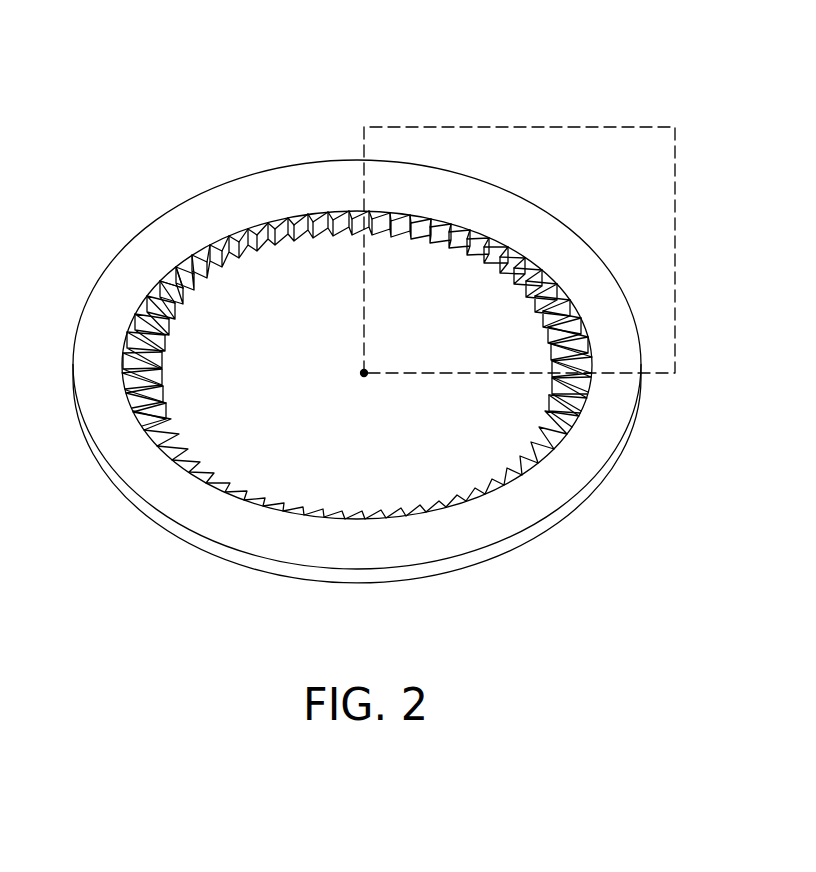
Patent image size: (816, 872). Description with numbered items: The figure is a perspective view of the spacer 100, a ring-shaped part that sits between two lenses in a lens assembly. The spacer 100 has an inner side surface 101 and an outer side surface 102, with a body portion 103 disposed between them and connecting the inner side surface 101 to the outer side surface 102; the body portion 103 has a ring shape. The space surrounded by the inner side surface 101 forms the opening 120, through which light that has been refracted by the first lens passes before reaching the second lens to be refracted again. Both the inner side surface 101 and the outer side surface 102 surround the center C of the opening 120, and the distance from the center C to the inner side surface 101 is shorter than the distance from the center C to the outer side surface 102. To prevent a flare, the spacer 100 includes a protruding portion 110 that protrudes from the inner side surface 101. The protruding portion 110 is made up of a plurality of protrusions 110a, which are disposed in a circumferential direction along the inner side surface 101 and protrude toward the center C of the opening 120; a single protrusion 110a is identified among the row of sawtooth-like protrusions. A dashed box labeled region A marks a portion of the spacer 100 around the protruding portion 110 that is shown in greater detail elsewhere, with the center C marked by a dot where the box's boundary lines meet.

The spacer 100 is at (131, 30).
The inner side surface 101 is at (200, 240).
The outer side surface 102 is at (145, 507).
The body portion 103 is at (122, 275).
The protruding portion 110 is at (575, 408).
The protrusions 110a is at (207, 284).
The opening 120 is at (252, 423).
The center C is at (363, 379).
The region A is at (393, 125).